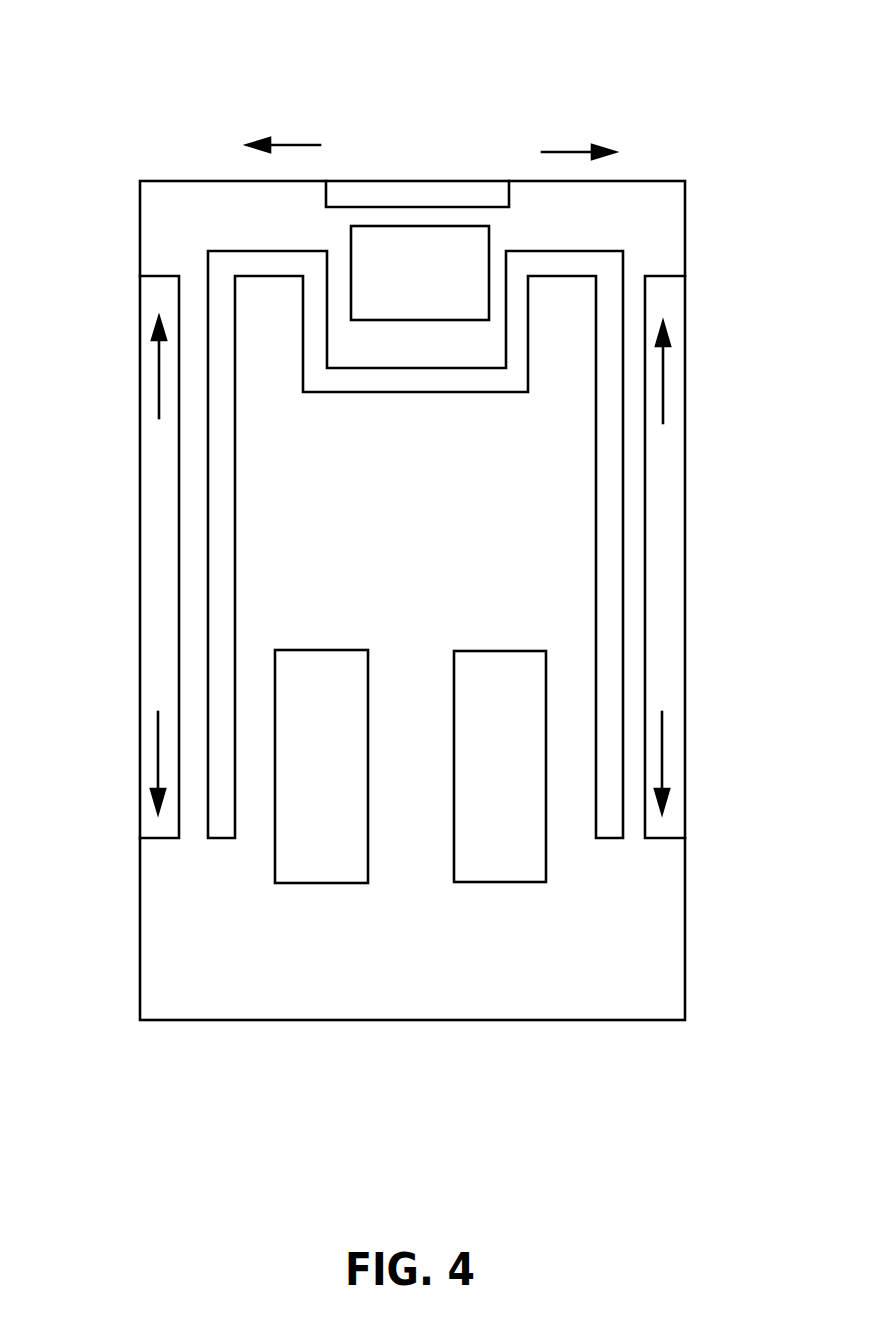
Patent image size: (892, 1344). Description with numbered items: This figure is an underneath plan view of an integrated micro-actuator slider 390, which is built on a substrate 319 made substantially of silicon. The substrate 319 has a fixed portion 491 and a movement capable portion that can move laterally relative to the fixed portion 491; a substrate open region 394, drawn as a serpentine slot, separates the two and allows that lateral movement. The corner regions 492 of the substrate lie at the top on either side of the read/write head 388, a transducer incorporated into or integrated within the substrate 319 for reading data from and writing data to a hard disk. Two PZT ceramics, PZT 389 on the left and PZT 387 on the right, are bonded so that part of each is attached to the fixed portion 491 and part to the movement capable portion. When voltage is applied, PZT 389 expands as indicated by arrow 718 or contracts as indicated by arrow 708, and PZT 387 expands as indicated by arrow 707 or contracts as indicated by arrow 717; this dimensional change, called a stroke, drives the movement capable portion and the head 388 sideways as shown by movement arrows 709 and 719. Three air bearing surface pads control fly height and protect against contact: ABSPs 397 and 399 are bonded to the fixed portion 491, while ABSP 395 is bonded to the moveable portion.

The integrated micro-actuator slider 390 is at (397, 33).
The substrate 319 is at (158, 213).
The fixed portion 491 is at (413, 548).
The corner region 492 is at (198, 198).
The read/write head 388 is at (447, 198).
The air bearing surface pad 395 is at (393, 287).
The substrate open region 394 is at (608, 273).
The PZT 389 is at (157, 552).
The PZT 387 is at (665, 552).
The air bearing surface pad 399 is at (300, 780).
The air bearing surface pad 397 is at (478, 780).
The arrow 718 is at (159, 372).
The arrow 707 is at (665, 380).
The arrow 708 is at (158, 758).
The arrow 717 is at (658, 748).
The movement arrow 709 is at (277, 143).
The movement arrow 719 is at (573, 149).